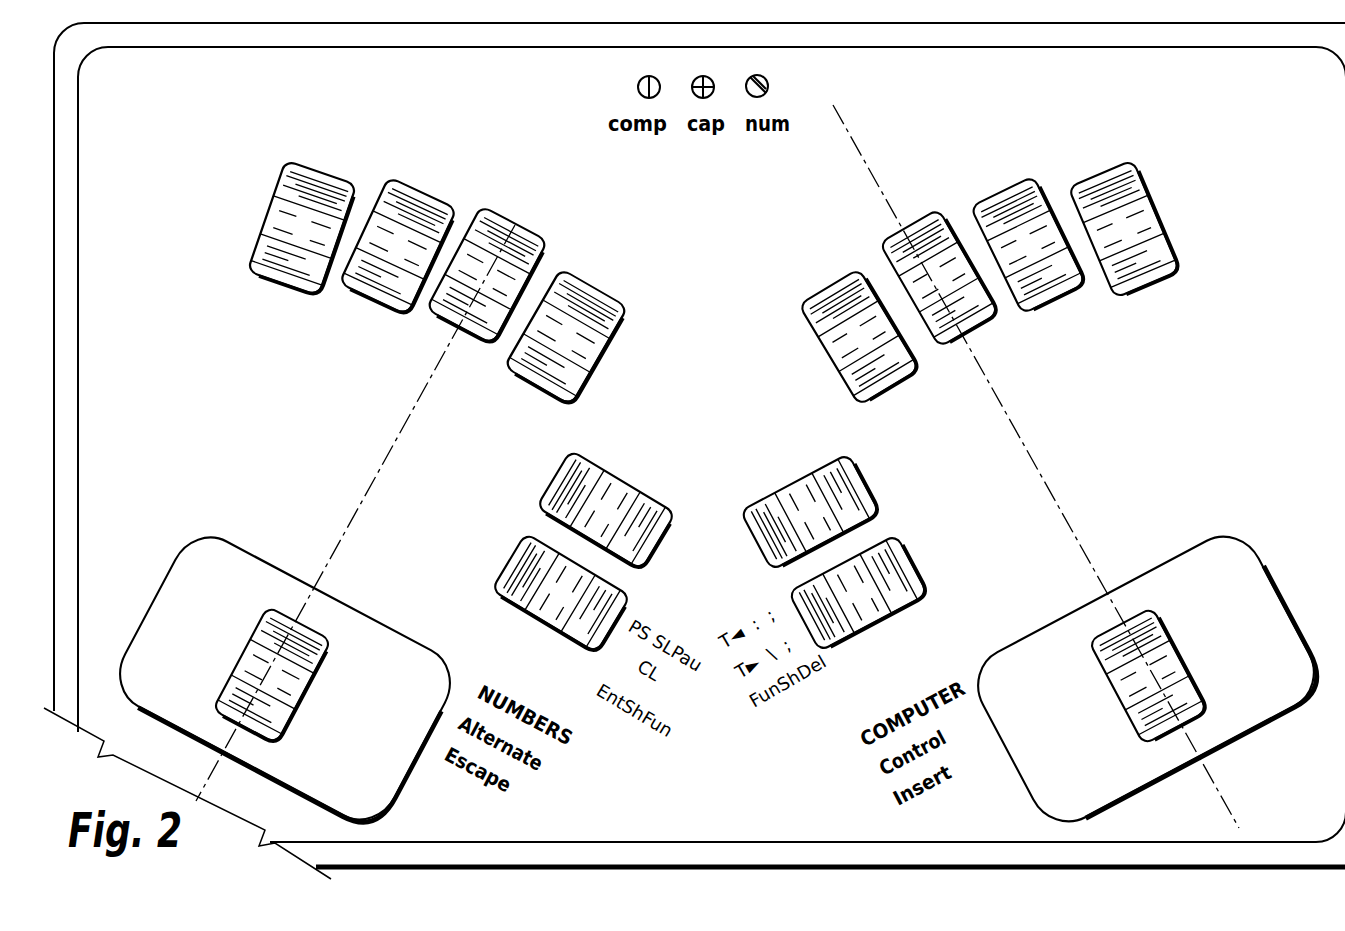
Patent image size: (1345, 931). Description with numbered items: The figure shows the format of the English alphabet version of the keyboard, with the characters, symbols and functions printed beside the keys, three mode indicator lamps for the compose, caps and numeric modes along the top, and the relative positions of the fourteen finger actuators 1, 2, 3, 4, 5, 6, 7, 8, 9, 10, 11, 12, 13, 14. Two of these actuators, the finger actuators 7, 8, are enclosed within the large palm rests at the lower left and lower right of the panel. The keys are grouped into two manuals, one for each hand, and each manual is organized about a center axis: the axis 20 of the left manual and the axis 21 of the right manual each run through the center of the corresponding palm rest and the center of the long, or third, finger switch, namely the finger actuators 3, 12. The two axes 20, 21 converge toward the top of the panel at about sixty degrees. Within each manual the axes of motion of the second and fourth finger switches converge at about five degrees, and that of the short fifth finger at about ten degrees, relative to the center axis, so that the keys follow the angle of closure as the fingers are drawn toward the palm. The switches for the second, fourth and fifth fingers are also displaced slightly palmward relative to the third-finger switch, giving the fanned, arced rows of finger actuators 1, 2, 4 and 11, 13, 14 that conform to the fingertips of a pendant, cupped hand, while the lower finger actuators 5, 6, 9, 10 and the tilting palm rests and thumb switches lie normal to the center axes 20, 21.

The finger actuator 1 is at (299, 226).
The finger actuator 2 is at (395, 244).
The finger actuator 3 is at (484, 273).
The finger actuator 4 is at (563, 334).
The finger actuator 5 is at (603, 509).
The finger actuator 6 is at (558, 592).
The finger actuator 7 is at (269, 673).
The finger actuator 8 is at (1160, 667).
The finger actuator 9 is at (855, 592).
The finger actuator 10 is at (807, 511).
The finger actuator 11 is at (870, 327).
The finger actuator 12 is at (951, 268).
The finger actuator 13 is at (1040, 237).
The finger actuator 14 is at (1137, 220).
The axis of the left manual 20 is at (386, 461).
The axis of the right manual 21 is at (1049, 488).